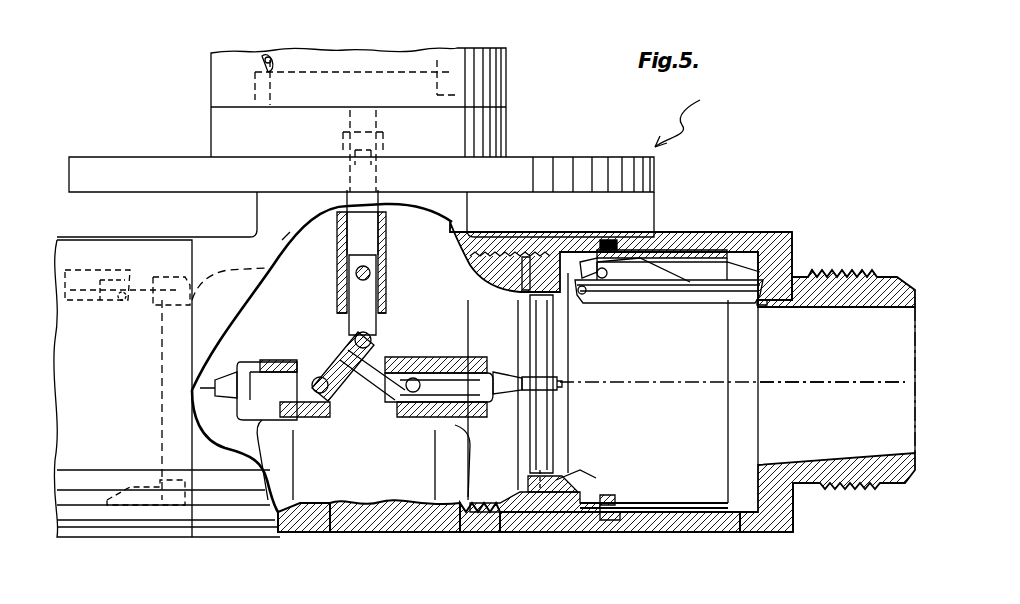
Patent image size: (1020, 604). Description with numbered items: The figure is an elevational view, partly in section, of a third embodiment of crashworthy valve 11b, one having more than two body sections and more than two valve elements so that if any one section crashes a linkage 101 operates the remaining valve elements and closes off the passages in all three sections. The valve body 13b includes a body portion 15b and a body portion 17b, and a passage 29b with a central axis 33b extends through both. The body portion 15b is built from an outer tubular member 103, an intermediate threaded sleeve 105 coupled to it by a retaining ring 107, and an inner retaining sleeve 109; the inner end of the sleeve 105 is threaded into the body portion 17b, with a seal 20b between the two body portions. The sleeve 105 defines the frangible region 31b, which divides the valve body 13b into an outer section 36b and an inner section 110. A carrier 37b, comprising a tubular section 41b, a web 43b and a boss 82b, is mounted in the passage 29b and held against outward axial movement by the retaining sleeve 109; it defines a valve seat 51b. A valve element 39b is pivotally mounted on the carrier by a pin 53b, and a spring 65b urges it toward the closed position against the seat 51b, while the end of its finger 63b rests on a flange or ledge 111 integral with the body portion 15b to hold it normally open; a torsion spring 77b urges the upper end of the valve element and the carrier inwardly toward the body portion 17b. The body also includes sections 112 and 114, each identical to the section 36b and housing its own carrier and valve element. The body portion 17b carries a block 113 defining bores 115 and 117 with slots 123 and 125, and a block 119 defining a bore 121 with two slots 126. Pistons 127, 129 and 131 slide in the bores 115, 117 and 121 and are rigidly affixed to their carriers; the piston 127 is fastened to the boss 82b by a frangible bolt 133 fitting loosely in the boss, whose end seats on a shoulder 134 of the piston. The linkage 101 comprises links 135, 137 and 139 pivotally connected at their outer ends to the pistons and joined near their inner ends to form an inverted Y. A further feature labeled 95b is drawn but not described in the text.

The crashworthy valve 11b is at (699, 118).
The valve body 13b is at (230, 549).
The body portion 15b is at (666, 543).
The body portion 17b is at (482, 542).
The seal 20b is at (540, 512).
The passage 29b is at (845, 300).
The frangible region 31b is at (518, 385).
The central axis 33b is at (830, 380).
The outer section 36b is at (710, 532).
The carrier 37b is at (370, 68).
The valve element 39b is at (280, 60).
The tubular section 41b is at (570, 478).
The web 43b is at (530, 427).
The valve seat 51b is at (566, 475).
The pin 53b is at (582, 295).
The finger 63b is at (768, 265).
The spring 65b is at (640, 283).
The torsion spring 77b is at (618, 300).
The boss 82b is at (348, 110).
The bleed passage 95b is at (548, 532).
The linkage 101 is at (331, 329).
The outer tubular member 103 is at (775, 520).
The intermediate threaded sleeve 105 is at (742, 532).
The retaining ring 107 is at (595, 512).
The inner retaining sleeve 109 is at (675, 503).
The inner section 110 is at (400, 532).
The flange or ledge 111 is at (762, 305).
The section 112 is at (108, 537).
The block 113 is at (318, 532).
The section 114 is at (211, 86).
The bore 115 is at (403, 403).
The bore 117 is at (314, 418).
The block 119 is at (337, 240).
The bore 121 is at (386, 240).
The slot 123 is at (407, 357).
The slot 125 is at (386, 305).
The slots 126 is at (349, 290).
The piston 127 is at (458, 418).
The piston 129 is at (265, 420).
The piston 131 is at (347, 190).
The frangible bolt 133 is at (552, 404).
The shoulder 134 is at (522, 378).
The link 135 is at (344, 400).
The link 137 is at (340, 360).
The link 139 is at (370, 276).